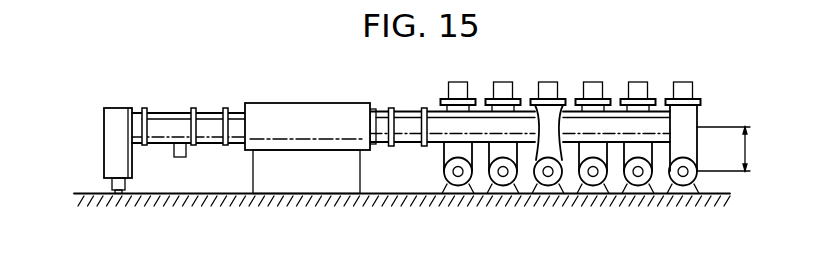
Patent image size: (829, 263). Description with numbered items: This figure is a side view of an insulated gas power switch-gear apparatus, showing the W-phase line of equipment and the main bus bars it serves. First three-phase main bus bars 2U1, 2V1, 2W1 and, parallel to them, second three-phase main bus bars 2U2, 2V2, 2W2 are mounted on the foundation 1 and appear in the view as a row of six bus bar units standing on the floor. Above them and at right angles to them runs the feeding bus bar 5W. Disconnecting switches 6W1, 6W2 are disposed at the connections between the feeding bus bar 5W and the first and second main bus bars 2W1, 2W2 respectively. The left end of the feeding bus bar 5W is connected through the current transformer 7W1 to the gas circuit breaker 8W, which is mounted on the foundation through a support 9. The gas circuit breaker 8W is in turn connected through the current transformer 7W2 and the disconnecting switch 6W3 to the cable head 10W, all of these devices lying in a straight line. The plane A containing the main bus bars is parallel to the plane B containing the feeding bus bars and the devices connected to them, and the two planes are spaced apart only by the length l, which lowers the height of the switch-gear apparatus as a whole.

The foundation 1 is at (397, 200).
The support 9 is at (300, 186).
The cable head 10W is at (104, 117).
The gas circuit breaker 8W is at (308, 110).
The disconnecting switch 6W3 is at (166, 112).
The current transformer 7W2 is at (213, 112).
The current transformer 7W1 is at (410, 112).
The disconnecting switch 6W1 is at (528, 110).
The feeding bus bar 5W is at (568, 118).
The disconnecting switch 6W2 is at (700, 106).
The first main bus bar 2U1 is at (453, 187).
The first main bus bar 2V1 is at (503, 187).
The first main bus bar 2W1 is at (547, 187).
The second main bus bar 2U2 is at (590, 187).
The second main bus bar 2V2 is at (637, 187).
The second main bus bar 2W2 is at (685, 207).
The plane containing the main bus bars A is at (740, 172).
The plane containing the feeding bus bars B is at (740, 127).
The length l is at (736, 149).